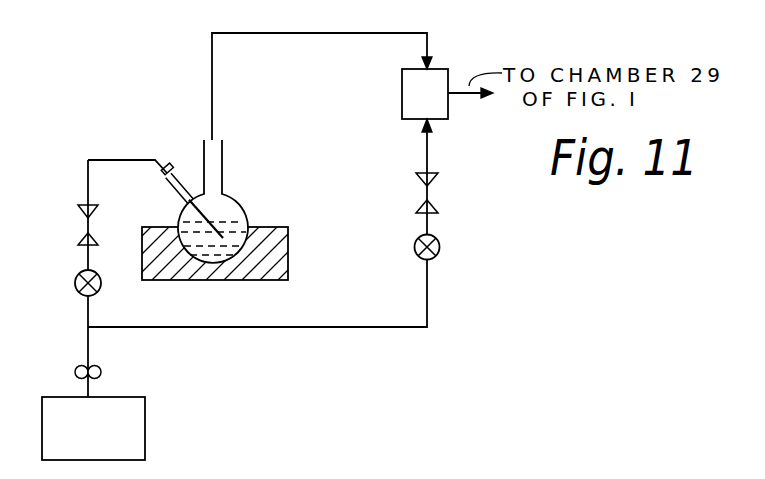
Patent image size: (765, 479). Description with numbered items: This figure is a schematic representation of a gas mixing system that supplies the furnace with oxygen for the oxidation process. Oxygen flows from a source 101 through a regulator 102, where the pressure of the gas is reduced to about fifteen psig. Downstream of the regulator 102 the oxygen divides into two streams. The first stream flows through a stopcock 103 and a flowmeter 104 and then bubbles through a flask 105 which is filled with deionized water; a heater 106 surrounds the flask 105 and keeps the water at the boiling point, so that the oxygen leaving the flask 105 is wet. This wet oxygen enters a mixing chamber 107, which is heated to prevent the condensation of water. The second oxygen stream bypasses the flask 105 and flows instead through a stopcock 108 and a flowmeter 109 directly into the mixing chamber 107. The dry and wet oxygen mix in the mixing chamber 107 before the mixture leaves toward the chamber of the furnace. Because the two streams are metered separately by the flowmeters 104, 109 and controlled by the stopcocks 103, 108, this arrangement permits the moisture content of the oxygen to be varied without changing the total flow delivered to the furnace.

The source 101 is at (147, 440).
The regulator 102 is at (102, 372).
The stopcock 103 is at (75, 284).
The flowmeter 104 is at (78, 222).
The flask 105 is at (243, 201).
The heater 106 is at (290, 257).
The mixing chamber 107 is at (402, 93).
The stopcock 108 is at (440, 246).
The flowmeter 109 is at (440, 192).